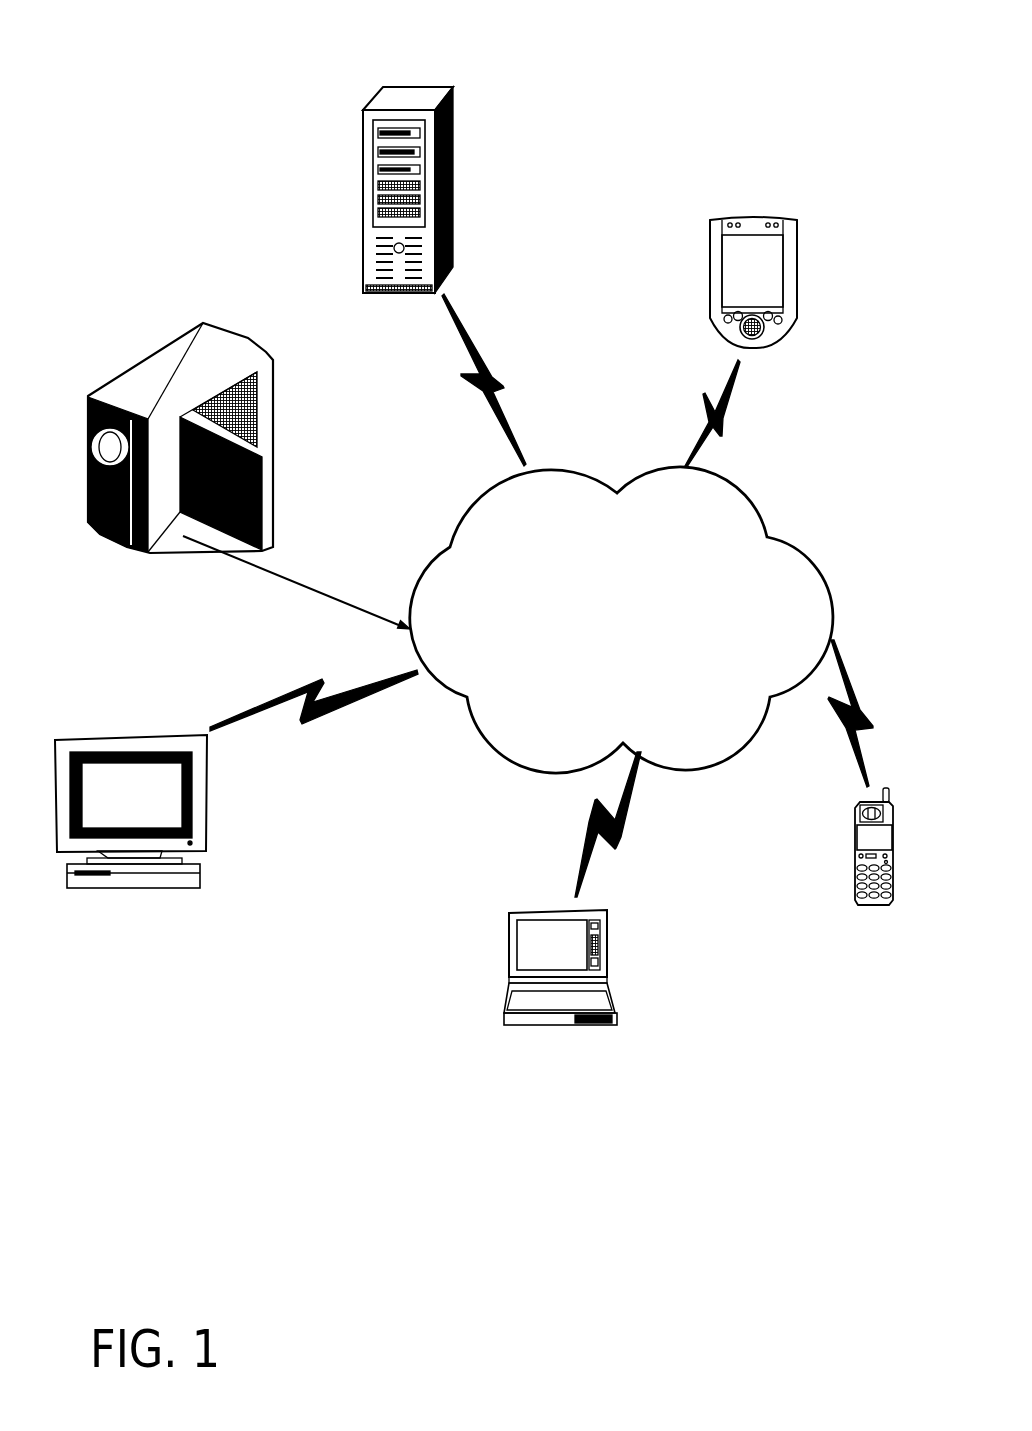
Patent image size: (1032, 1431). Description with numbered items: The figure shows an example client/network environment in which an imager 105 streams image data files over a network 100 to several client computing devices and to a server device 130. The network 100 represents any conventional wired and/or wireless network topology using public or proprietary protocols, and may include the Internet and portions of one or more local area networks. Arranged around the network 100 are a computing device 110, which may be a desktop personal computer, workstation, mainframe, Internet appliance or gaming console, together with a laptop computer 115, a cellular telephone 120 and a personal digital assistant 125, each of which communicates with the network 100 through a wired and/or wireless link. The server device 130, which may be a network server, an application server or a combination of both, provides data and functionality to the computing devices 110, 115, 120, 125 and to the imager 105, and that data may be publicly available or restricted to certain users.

The network 100 is at (621, 620).
The imager 105 is at (200, 310).
The computing device 110 is at (135, 722).
The laptop computer 115 is at (497, 905).
The cellular telephone 120 is at (852, 918).
The personal digital assistant 125 is at (755, 200).
The server device 130 is at (380, 73).